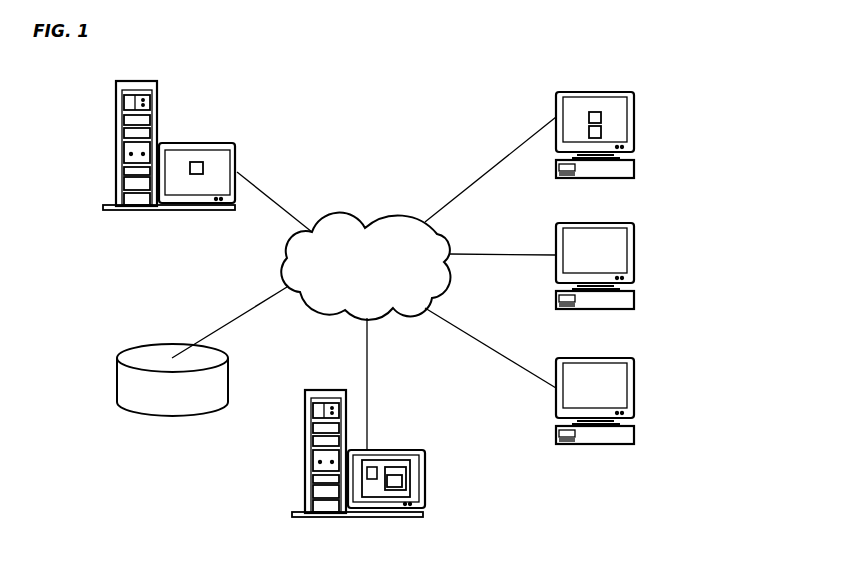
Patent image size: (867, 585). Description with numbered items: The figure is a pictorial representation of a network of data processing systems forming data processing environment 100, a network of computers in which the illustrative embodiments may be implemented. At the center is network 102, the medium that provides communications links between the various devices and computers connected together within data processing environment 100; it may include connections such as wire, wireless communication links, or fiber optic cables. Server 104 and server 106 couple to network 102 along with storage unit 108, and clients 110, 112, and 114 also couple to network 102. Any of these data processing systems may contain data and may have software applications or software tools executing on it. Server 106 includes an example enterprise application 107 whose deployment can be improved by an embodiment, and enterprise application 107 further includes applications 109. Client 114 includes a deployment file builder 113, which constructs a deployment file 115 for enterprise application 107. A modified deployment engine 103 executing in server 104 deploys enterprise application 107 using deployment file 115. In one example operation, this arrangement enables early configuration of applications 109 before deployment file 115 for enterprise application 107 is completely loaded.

The data processing environment 100 is at (68, 104).
The network 102 is at (357, 279).
The modified deployment engine 103 is at (200, 162).
The server 104 is at (211, 230).
The server 106 is at (399, 536).
The enterprise application 107 is at (406, 487).
The storage unit 108 is at (161, 410).
The applications 109 is at (377, 467).
The client 110 is at (634, 328).
The client 112 is at (634, 463).
The deployment file builder 113 is at (595, 112).
The client 114 is at (634, 194).
The deployment file 115 is at (601, 130).